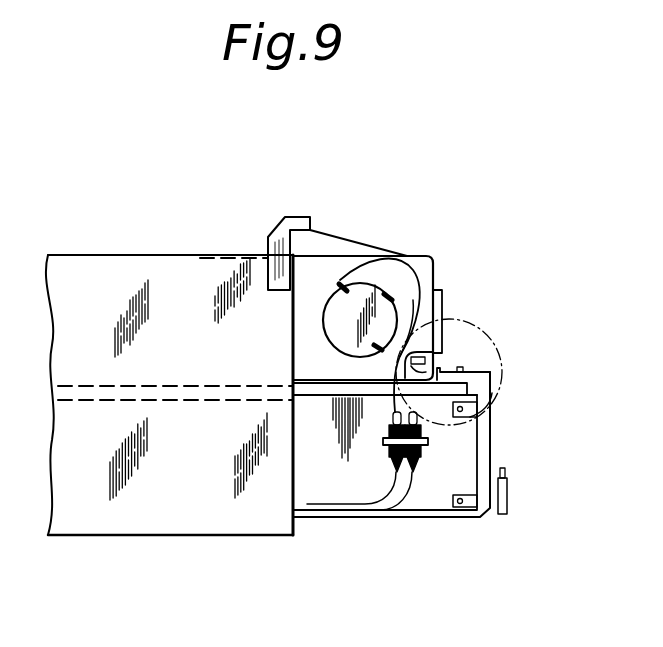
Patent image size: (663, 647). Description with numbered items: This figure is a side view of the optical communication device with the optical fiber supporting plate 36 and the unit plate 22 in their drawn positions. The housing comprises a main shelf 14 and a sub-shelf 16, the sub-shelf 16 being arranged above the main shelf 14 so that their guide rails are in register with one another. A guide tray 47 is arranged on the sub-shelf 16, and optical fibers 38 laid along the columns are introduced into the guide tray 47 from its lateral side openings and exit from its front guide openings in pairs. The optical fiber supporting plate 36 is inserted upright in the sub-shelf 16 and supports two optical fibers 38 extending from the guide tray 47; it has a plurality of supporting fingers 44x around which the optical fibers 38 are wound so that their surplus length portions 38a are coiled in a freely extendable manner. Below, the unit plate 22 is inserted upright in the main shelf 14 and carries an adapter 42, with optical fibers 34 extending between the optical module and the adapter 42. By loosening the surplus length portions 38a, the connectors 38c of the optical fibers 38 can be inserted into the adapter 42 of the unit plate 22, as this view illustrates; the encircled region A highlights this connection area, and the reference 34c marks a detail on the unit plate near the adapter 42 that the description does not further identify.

The main shelf 14 is at (223, 522).
The sub-shelf 16 is at (95, 275).
The unit plate 22 is at (433, 508).
The optical fibers 34 is at (362, 505).
The wire fixing post 34c is at (424, 458).
The optical fiber supporting plate 36 is at (424, 262).
The optical fibers 38 is at (358, 246).
The surplus length portions 38a is at (407, 336).
The connectors 38c is at (424, 432).
The adapter 42 is at (424, 441).
The supporting fingers 44x is at (399, 312).
The guide tray 47 is at (292, 218).
The region A is at (490, 331).